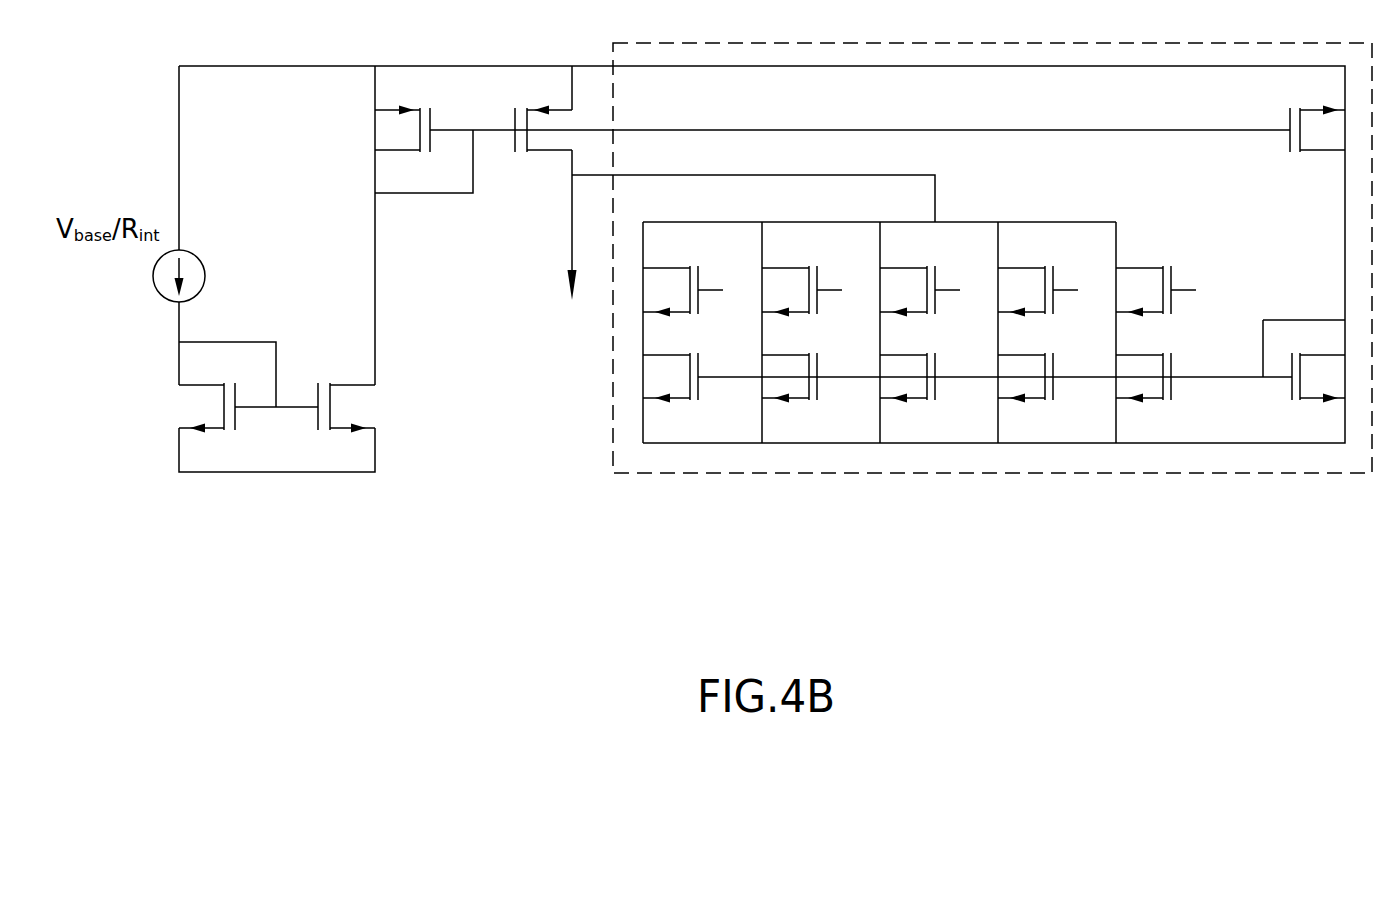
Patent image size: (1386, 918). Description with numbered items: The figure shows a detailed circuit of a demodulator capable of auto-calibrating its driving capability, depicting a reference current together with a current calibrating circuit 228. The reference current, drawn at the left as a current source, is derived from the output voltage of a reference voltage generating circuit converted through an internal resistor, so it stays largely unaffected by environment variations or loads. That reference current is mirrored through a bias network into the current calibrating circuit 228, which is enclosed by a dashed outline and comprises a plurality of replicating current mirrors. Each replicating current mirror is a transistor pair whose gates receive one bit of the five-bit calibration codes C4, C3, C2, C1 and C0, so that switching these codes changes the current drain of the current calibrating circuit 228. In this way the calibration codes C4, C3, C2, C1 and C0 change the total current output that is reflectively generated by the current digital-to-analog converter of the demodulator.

The current calibrating circuit 228 is at (992, 309).
The calibration code C4 is at (691, 332).
The calibration code C3 is at (810, 332).
The calibration code C2 is at (928, 332).
The calibration code C1 is at (1046, 332).
The calibration code C0 is at (1164, 332).